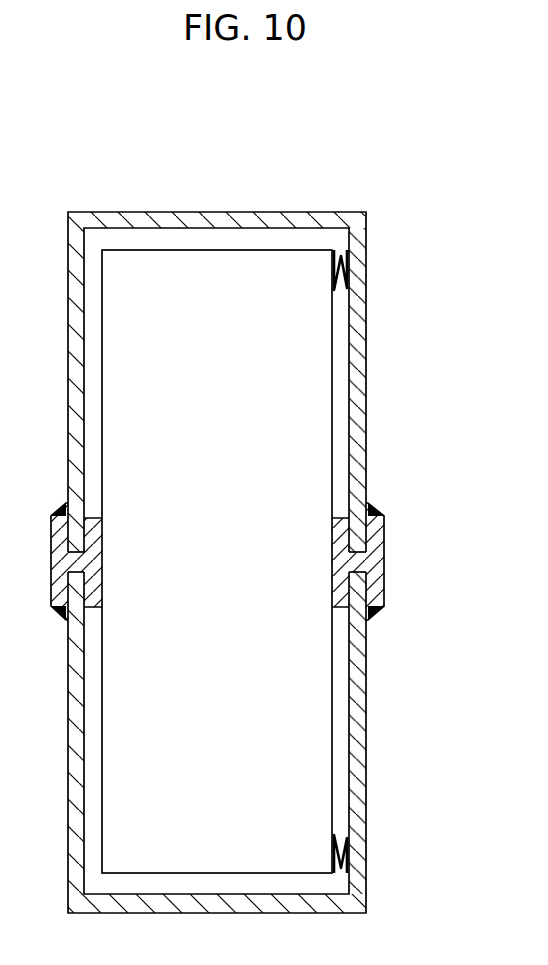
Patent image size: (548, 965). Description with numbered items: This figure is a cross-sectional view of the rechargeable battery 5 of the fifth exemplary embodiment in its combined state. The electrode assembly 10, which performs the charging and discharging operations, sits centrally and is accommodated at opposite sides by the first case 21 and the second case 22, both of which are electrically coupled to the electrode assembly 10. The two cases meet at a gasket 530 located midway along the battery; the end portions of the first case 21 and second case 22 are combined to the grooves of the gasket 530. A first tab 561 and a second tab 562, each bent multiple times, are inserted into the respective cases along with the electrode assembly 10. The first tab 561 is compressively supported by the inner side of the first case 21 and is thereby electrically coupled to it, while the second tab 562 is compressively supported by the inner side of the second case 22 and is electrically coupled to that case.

The rechargeable battery 5 is at (256, 176).
The electrode assembly 10 is at (313, 415).
The first case 21 is at (366, 778).
The second case 22 is at (360, 333).
The gasket 530 is at (384, 553).
The first tab 561 is at (349, 868).
The second tab 562 is at (342, 262).